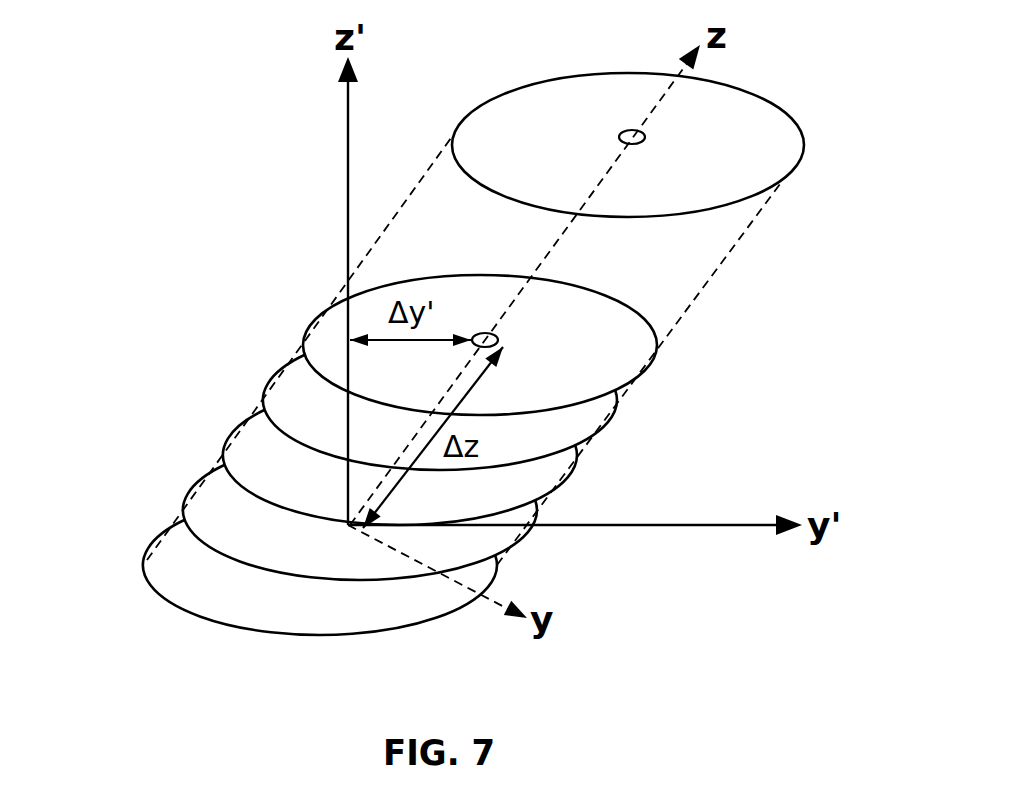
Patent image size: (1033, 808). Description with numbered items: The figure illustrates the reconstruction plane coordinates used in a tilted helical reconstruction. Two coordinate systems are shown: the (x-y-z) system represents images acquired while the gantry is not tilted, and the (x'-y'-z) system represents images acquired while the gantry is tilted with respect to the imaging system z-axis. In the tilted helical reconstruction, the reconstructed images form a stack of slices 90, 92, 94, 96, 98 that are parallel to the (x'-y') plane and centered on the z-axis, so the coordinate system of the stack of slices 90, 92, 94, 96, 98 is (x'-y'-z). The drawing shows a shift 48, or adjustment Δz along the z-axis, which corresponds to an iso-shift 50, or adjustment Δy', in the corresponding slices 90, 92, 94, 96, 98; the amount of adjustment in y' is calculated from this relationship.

The shift 48 is at (584, 441).
The iso-shift 50 is at (377, 343).
The slice 90 is at (151, 568).
The slice 92 is at (192, 515).
The slice 94 is at (231, 461).
The slice 96 is at (271, 406).
The slice 98 is at (311, 351).